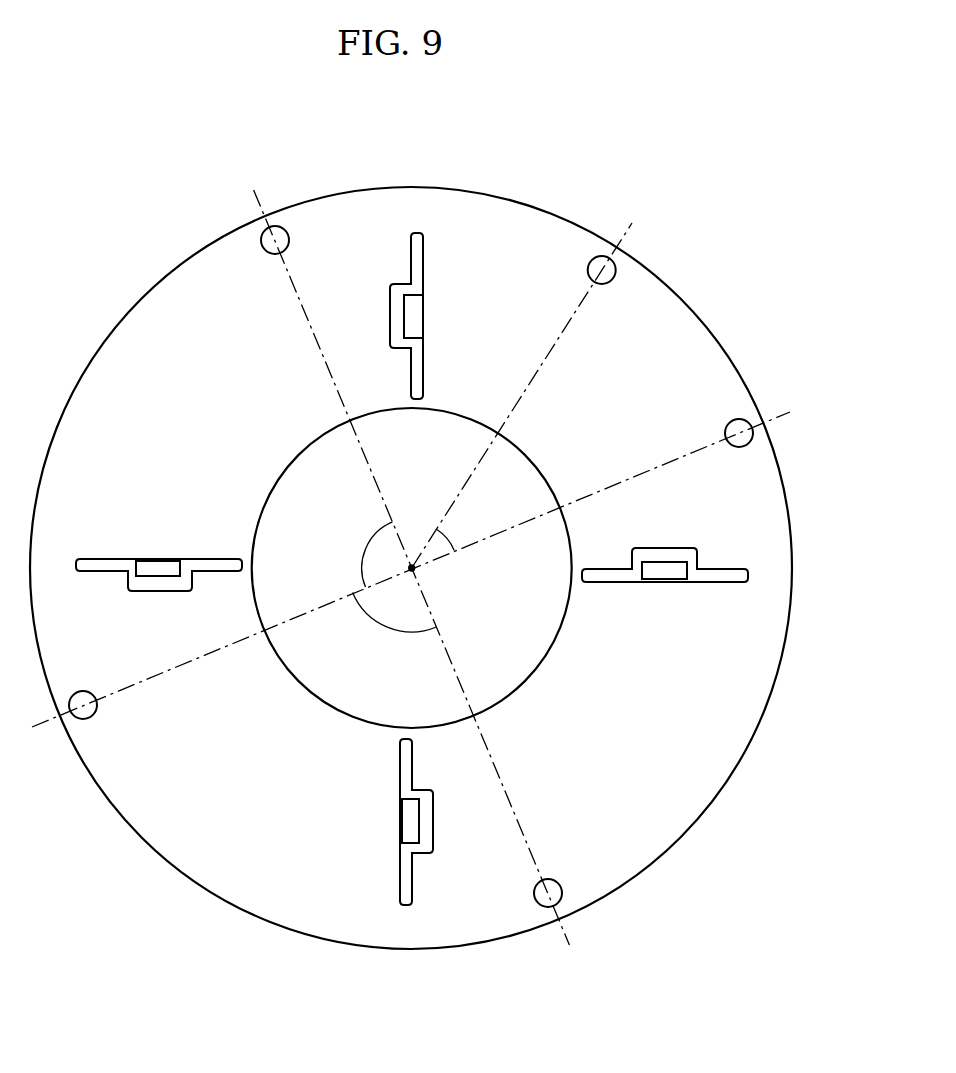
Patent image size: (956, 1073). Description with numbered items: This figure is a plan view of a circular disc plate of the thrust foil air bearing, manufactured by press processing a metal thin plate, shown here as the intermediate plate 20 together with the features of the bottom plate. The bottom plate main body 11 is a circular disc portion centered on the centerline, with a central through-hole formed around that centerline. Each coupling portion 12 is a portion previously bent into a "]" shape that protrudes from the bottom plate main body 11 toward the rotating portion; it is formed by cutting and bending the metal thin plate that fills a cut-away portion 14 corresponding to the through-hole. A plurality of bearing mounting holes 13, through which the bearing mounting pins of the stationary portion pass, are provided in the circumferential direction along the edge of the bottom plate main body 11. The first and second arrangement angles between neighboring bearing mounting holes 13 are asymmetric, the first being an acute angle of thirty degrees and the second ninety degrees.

The intermediate plate 20 is at (438, 539).
The bottom plate main body 11 is at (752, 487).
The coupling portion 12 is at (158, 568).
The bearing mounting hole 13 is at (750, 446).
The cut-away portion 14 is at (152, 592).